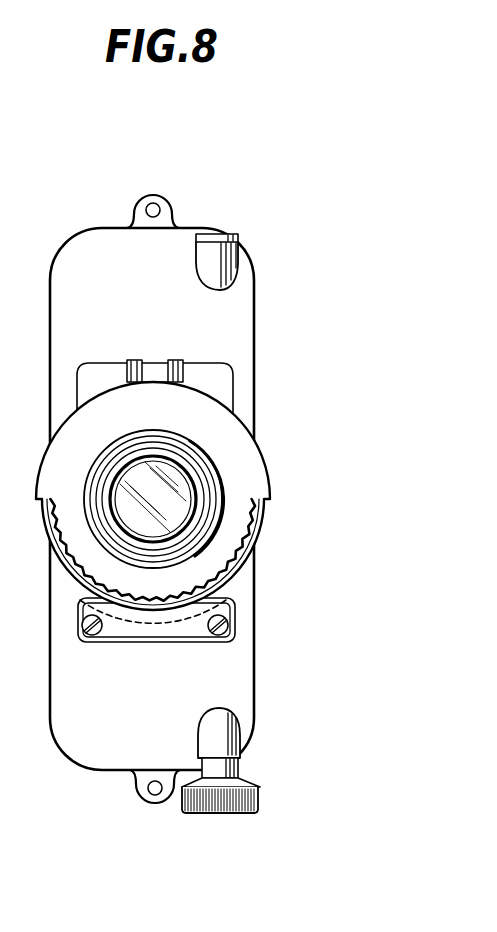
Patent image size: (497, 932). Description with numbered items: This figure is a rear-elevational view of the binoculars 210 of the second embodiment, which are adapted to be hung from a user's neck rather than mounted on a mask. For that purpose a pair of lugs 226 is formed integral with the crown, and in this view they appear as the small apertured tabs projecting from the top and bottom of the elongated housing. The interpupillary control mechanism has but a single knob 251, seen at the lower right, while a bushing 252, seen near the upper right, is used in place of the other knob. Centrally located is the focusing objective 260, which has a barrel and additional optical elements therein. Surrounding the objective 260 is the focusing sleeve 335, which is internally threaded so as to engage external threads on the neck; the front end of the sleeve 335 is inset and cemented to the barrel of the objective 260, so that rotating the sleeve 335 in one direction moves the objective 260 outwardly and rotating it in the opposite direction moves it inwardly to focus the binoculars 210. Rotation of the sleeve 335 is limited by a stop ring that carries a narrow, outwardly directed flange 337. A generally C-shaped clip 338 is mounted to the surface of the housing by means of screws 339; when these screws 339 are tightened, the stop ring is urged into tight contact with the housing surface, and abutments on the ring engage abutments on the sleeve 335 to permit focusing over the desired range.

The binoculars 210 is at (270, 191).
The lugs 226 is at (159, 199).
The knob 251 is at (256, 808).
The bushing 252 is at (239, 236).
The focusing objective 260 is at (210, 493).
The focusing sleeve 335 is at (182, 496).
The flange 337 is at (244, 578).
The C-shaped clip 338 is at (226, 607).
The screws 339 is at (230, 625).